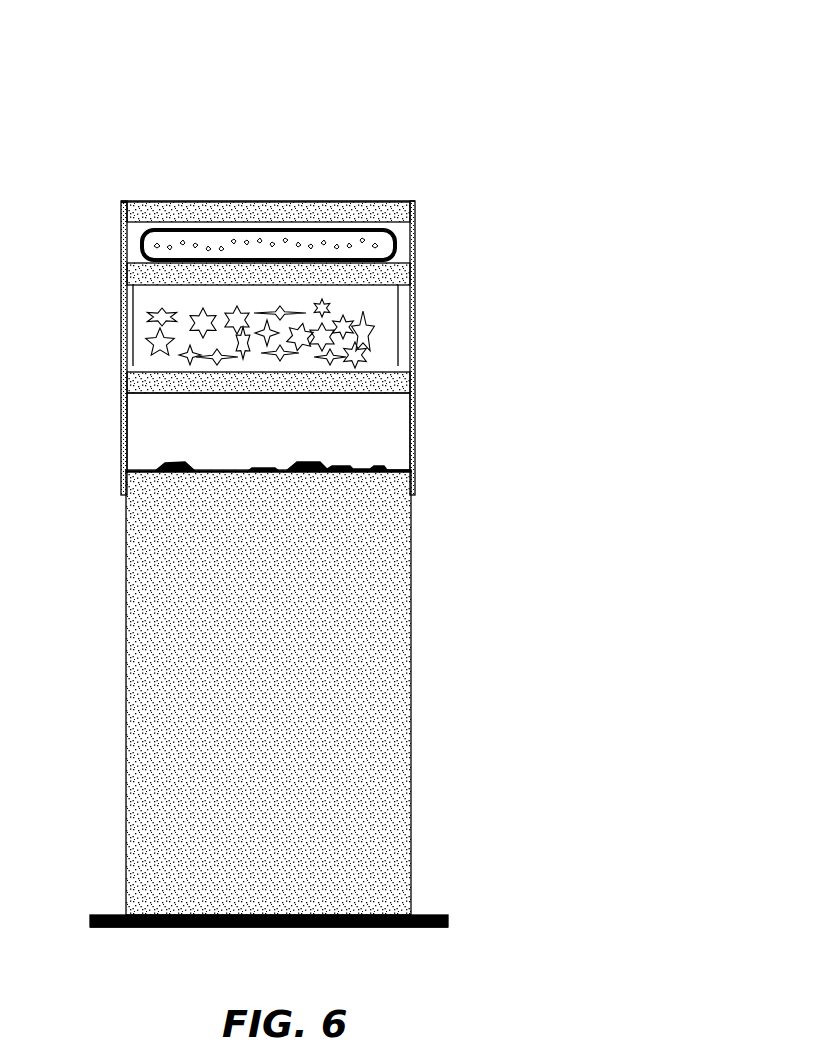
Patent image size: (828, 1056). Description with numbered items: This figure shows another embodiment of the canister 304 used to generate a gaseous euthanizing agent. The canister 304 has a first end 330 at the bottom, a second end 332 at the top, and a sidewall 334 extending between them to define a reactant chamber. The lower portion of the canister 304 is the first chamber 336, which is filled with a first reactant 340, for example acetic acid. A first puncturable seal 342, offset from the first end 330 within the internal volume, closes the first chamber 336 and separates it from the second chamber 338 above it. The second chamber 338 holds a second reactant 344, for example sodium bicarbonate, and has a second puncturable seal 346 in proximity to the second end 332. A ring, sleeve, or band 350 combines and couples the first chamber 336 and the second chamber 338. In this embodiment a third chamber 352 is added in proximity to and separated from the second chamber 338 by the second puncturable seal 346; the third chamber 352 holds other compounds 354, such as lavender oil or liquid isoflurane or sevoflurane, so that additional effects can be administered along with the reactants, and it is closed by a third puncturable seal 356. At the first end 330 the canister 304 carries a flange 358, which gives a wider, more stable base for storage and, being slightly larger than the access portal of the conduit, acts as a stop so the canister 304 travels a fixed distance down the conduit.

The canister 304 is at (303, 99).
The first end 330 is at (162, 927).
The second end 332 is at (122, 203).
The sidewall 334 is at (413, 568).
The first chamber 336 is at (122, 637).
The second chamber 338 is at (106, 332).
The first reactant 340 is at (388, 670).
The first puncturable seal 342 is at (190, 385).
The second reactant 344 is at (288, 325).
The second puncturable seal 346 is at (290, 270).
The ring, sleeve, or band 350 is at (416, 433).
The third chamber 352 is at (419, 231).
The other compounds 354 is at (147, 236).
The third puncturable seal 356 is at (306, 201).
The flange 358 is at (448, 915).